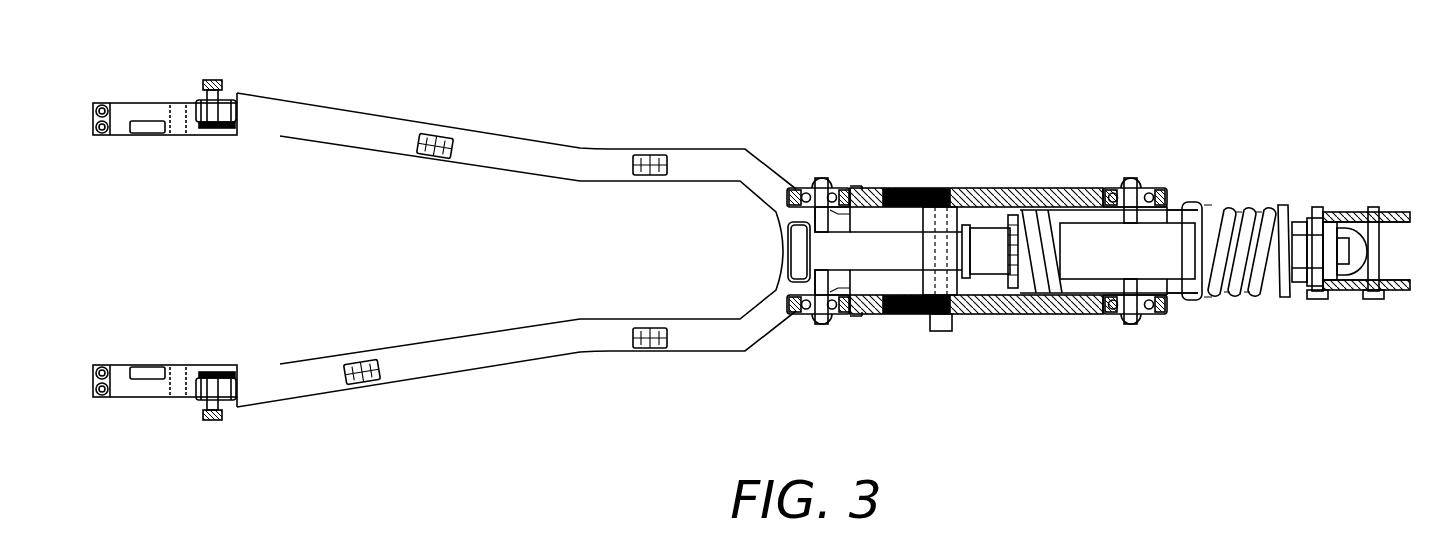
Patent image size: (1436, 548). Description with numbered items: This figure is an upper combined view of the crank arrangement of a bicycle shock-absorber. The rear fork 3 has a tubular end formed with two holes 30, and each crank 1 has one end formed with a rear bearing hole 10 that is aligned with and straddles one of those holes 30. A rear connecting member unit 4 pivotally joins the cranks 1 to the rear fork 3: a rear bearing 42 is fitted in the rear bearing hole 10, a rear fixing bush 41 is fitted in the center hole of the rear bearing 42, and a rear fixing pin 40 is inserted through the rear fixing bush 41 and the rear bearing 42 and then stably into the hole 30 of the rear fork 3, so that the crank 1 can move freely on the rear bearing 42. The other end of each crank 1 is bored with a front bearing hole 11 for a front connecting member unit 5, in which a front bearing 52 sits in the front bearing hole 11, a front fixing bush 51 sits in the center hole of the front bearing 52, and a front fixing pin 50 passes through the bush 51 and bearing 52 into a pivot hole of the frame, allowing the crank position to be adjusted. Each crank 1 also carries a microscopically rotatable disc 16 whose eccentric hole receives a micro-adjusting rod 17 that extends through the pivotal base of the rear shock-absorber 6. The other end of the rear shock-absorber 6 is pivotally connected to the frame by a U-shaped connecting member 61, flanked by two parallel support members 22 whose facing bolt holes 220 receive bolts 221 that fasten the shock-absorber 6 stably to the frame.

The crank 1 is at (1024, 267).
The rear fork 3 is at (548, 135).
The rear connecting member unit 4 is at (826, 196).
The rear fixing pin 40 is at (807, 175).
The rear fixing bush 41 is at (837, 180).
The rear bearing 42 is at (847, 187).
The rear bearing hole 10 is at (860, 193).
The disc 16 is at (905, 318).
The micro-adjusting rod 17 is at (940, 322).
The front connecting member unit 5 is at (1136, 229).
The front fixing pin 50 is at (1122, 173).
The front fixing bush 51 is at (1142, 183).
The front bearing 52 is at (1147, 187).
The front bearing hole 11 is at (1147, 318).
The rear shock-absorber 6 is at (1241, 300).
The U-shaped connecting member 61 is at (1345, 273).
The support member 22 is at (1340, 210).
The bolt hole 220 is at (1370, 210).
The bolt 221 is at (1372, 253).
The hole 30 is at (795, 237).